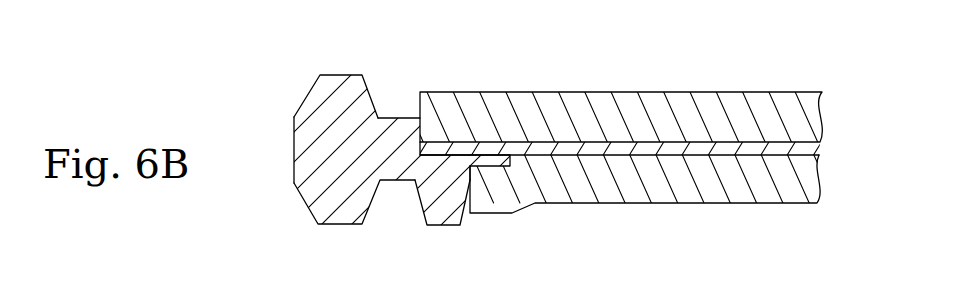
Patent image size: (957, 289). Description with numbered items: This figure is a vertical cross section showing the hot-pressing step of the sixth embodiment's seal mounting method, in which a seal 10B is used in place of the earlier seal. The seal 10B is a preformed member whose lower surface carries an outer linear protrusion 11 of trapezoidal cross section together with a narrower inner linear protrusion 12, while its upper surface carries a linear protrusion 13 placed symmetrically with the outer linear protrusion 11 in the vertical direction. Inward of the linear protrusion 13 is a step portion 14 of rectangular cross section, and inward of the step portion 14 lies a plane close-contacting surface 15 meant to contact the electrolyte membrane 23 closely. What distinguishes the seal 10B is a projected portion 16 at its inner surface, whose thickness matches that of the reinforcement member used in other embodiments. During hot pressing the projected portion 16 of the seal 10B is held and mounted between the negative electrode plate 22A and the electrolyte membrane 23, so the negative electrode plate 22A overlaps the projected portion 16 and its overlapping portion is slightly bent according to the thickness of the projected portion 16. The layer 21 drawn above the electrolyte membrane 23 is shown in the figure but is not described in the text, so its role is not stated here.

The seal 10B is at (291, 152).
The outer linear protrusion 11 is at (338, 225).
The inner linear protrusion 12 is at (437, 225).
The linear protrusion 13 is at (340, 75).
The step portion 14 is at (392, 117).
The close-contacting surface 15 is at (458, 142).
The projected portion 16 is at (513, 163).
The substrate 21 is at (575, 92).
The negative electrode plate 22A is at (665, 203).
The electrolyte membrane 23 is at (723, 141).